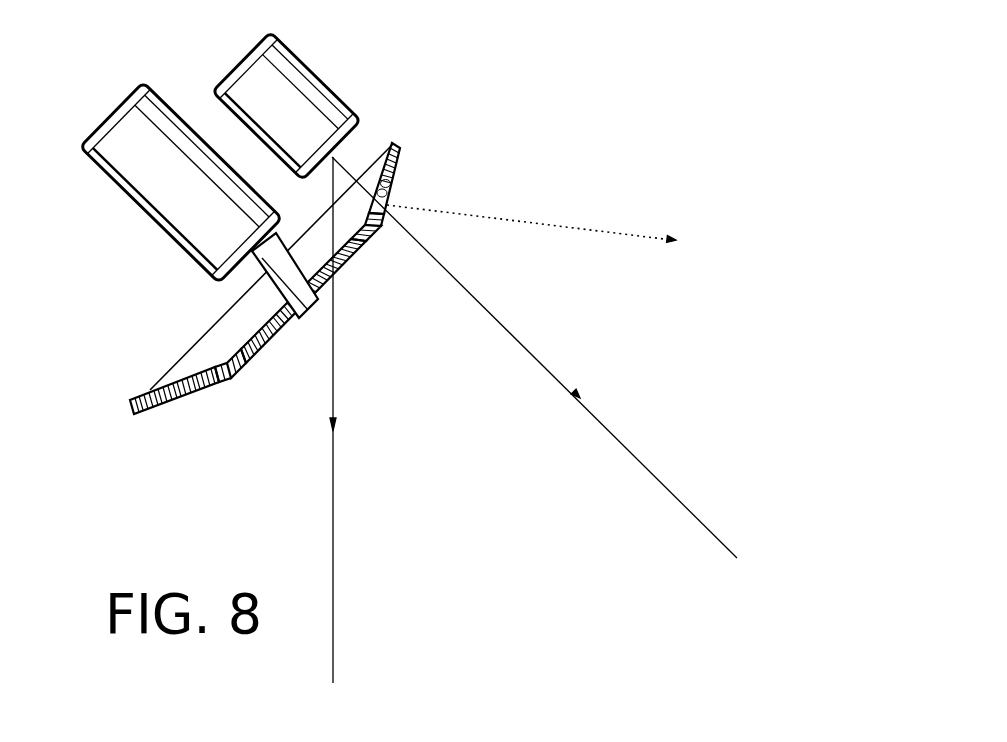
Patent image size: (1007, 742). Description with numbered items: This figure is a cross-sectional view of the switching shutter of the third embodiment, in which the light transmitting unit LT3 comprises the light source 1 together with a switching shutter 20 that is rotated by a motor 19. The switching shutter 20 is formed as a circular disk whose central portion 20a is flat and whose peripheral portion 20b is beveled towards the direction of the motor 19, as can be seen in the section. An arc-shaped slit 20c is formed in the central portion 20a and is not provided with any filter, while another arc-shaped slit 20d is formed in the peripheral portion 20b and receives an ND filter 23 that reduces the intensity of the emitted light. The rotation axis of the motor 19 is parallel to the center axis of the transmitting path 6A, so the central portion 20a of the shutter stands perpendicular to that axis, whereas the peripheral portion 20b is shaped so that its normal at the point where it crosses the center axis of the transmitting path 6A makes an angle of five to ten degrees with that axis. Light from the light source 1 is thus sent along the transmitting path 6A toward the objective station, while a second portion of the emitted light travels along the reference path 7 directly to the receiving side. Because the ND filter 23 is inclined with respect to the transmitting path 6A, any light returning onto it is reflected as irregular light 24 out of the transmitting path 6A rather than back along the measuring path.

The light source 1 is at (290, 63).
The motor 19 is at (113, 132).
The switching shutter 20 is at (194, 332).
The central portion 20a is at (337, 277).
The peripheral portion 20b is at (147, 391).
The arc-shaped slit 20c is at (243, 369).
The arc-shaped slit 20d is at (386, 224).
The ND filter 23 is at (388, 188).
The irregular light 24 is at (613, 231).
The transmitting path 6A is at (612, 432).
The reference path 7 is at (336, 626).
The light transmitting unit LT3 is at (431, 72).